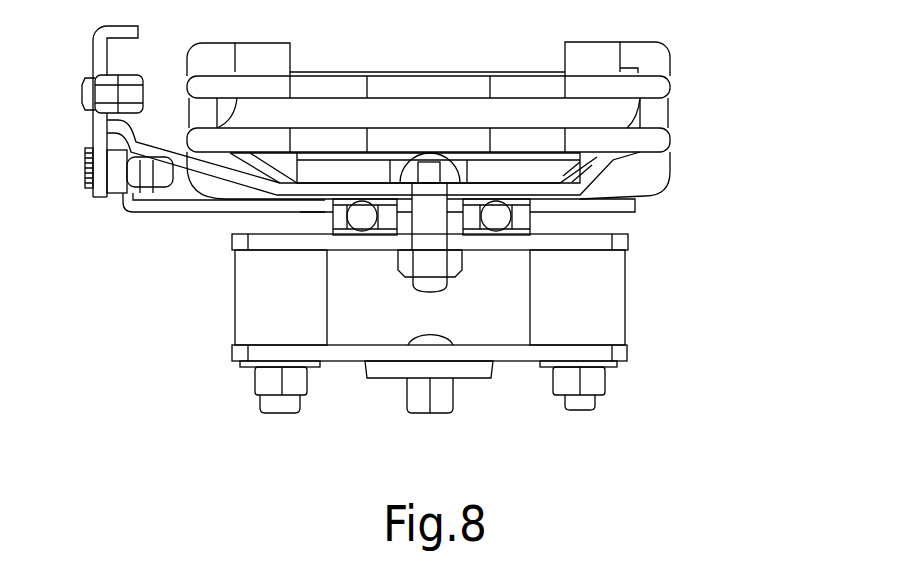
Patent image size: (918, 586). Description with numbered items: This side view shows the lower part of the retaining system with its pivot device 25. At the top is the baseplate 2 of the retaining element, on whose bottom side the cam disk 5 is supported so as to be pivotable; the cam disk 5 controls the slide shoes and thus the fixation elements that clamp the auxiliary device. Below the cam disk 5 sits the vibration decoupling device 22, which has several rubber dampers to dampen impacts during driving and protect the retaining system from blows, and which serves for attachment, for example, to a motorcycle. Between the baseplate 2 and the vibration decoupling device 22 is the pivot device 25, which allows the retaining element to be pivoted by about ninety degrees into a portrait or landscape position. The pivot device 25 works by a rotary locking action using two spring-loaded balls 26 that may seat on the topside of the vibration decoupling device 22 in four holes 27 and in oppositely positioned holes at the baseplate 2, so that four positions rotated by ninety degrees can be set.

The baseplate 2 is at (597, 173).
The cam disk 5 is at (178, 208).
The vibration decoupling device 22 is at (668, 353).
The pivot device 25 is at (688, 219).
The spring-loaded balls 26 is at (360, 214).
The holes 27 is at (365, 243).